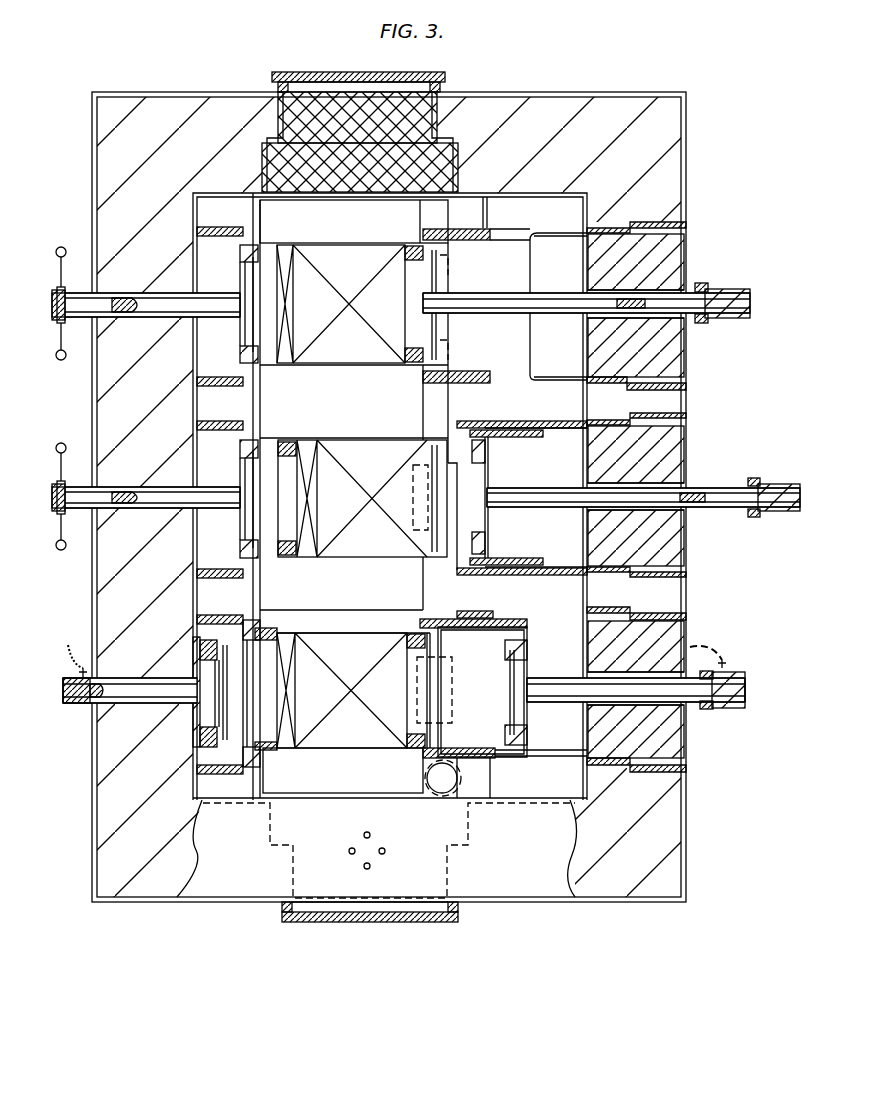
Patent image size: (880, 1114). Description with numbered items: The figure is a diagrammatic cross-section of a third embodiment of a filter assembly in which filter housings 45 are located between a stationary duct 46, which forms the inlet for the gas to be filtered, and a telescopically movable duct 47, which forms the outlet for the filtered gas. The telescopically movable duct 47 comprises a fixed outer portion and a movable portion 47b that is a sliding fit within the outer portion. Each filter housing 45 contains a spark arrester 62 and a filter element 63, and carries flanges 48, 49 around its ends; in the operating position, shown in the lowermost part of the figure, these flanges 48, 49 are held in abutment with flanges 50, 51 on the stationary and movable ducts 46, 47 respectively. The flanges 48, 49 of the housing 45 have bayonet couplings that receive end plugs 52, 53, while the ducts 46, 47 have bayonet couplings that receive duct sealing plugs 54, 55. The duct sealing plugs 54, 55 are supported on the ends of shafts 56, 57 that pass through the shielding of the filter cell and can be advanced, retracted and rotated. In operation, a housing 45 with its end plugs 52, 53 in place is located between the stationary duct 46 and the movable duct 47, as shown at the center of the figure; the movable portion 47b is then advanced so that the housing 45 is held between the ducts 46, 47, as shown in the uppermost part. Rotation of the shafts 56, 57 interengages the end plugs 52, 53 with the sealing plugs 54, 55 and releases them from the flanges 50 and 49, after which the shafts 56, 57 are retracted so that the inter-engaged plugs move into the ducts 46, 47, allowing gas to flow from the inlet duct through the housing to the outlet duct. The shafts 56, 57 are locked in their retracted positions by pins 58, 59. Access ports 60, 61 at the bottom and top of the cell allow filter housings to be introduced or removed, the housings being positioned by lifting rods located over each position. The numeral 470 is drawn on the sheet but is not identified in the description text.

The filter housing 45 is at (385, 627).
The stationary duct 46 is at (215, 757).
The telescopically movable duct 47 is at (707, 635).
The movable portion 47b is at (514, 760).
The flange 48 is at (268, 640).
The flange 49 is at (425, 633).
The flange 50 is at (262, 626).
The flange 51 is at (428, 632).
The end plug 52 is at (210, 672).
The end plug 53 is at (508, 681).
The duct sealing plug 54 is at (198, 718).
The duct sealing plug 55 is at (528, 656).
The shaft 56 is at (136, 686).
The shaft 57 is at (680, 688).
The pin 58 is at (68, 645).
The pin 59 is at (728, 660).
The access port 60 is at (420, 896).
The access port 61 is at (446, 92).
The spark arrester 62 is at (284, 748).
The filter element 63 is at (362, 665).
The lower housing bar 470 is at (665, 773).